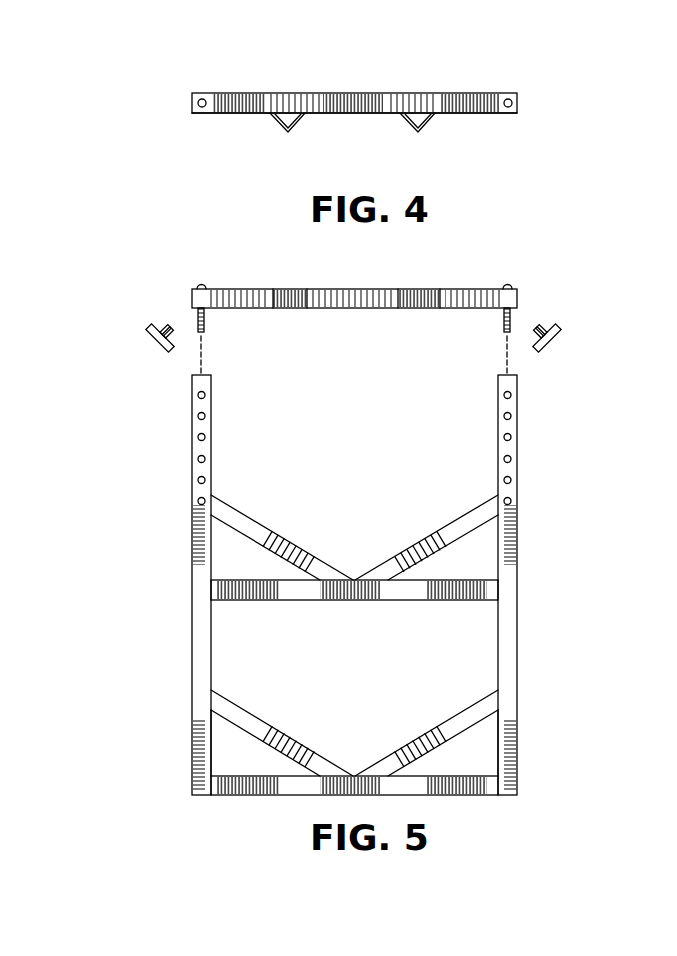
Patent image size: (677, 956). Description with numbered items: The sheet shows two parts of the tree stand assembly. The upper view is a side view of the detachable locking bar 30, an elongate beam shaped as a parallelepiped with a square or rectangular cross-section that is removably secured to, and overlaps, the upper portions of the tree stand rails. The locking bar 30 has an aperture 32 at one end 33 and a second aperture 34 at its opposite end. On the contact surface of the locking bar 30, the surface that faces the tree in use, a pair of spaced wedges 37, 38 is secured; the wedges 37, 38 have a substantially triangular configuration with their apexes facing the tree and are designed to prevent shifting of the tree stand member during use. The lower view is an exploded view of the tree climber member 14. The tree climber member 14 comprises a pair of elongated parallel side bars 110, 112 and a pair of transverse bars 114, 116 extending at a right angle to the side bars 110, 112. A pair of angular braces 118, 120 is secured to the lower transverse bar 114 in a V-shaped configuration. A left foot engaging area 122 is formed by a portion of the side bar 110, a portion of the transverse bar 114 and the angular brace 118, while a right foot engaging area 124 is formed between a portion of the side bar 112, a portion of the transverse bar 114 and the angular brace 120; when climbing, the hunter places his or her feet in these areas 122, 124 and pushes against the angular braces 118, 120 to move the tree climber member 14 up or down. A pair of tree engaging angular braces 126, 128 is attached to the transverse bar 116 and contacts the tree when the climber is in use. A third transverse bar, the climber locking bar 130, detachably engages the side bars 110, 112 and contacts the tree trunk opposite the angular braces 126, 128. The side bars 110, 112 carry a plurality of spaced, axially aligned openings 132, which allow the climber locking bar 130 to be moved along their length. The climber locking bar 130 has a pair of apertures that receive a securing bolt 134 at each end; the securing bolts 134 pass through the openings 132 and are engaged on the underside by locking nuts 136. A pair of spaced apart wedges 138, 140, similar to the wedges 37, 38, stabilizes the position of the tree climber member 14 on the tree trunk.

In FIG. 4, the locking bar 30 is at (352, 93).
In FIG. 4, the aperture 32 is at (200, 97).
In FIG. 4, the end 33 is at (220, 114).
In FIG. 4, the aperture 34 is at (506, 97).
In FIG. 4, the wedge 37 is at (298, 126).
In FIG. 4, the wedge 38 is at (425, 127).
In FIG. 5, the tree climber member 14 is at (150, 283).
In FIG. 5, the side bar 110 is at (197, 538).
In FIG. 5, the side bar 112 is at (512, 538).
In FIG. 5, the transverse bar 114 is at (258, 796).
In FIG. 5, the transverse bar 116 is at (262, 600).
In FIG. 5, the angular brace 118 is at (286, 727).
In FIG. 5, the angular brace 120 is at (423, 727).
In FIG. 5, the left foot engaging area 122 is at (240, 751).
In FIG. 5, the right foot engaging area 124 is at (468, 751).
In FIG. 5, the tree engaging angular brace 126 is at (286, 532).
In FIG. 5, the tree engaging angular brace 128 is at (423, 532).
In FIG. 5, the climber locking bar 130 is at (348, 308).
In FIG. 5, the openings 132 is at (205, 395).
In FIG. 5, the securing bolt 134 is at (207, 322).
In FIG. 5, the locking nut 136 is at (150, 342).
In FIG. 5, the wedge 138 is at (291, 308).
In FIG. 5, the wedge 140 is at (416, 308).